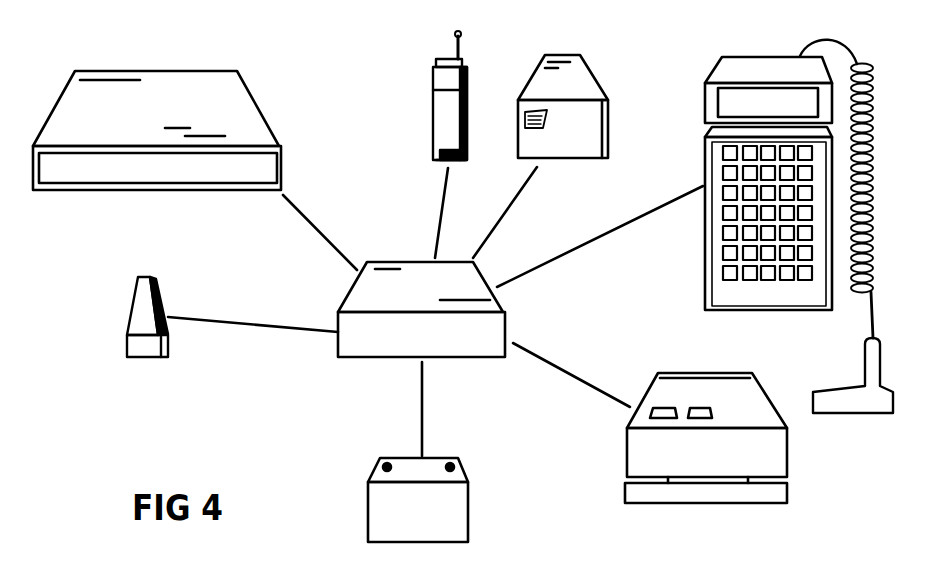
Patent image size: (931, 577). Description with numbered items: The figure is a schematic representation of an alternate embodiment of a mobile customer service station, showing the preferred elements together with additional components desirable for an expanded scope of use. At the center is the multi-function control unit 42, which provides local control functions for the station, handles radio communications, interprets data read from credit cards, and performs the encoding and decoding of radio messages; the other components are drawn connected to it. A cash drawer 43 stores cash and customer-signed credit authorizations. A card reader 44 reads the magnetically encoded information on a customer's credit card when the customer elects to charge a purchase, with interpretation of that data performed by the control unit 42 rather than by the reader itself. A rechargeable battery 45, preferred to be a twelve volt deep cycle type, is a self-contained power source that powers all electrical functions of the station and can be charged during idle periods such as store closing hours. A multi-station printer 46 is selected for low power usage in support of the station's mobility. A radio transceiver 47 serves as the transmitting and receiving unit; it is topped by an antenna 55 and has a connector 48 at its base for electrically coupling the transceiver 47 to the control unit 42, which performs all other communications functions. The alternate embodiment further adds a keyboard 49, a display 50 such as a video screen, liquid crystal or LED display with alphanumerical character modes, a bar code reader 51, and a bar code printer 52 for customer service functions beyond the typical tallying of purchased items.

The multi-function control unit 42 is at (355, 300).
The cash drawer 43 is at (200, 78).
The card reader 44 is at (158, 290).
The rechargeable battery 45 is at (373, 475).
The printer 46 is at (657, 385).
The radio transceiver 47 is at (433, 107).
The connector 48 is at (438, 160).
The keyboard 49 is at (705, 247).
The display 50 is at (717, 63).
The bar code reader 51 is at (862, 421).
The bar code printer 52 is at (595, 92).
The antenna 55 is at (456, 33).